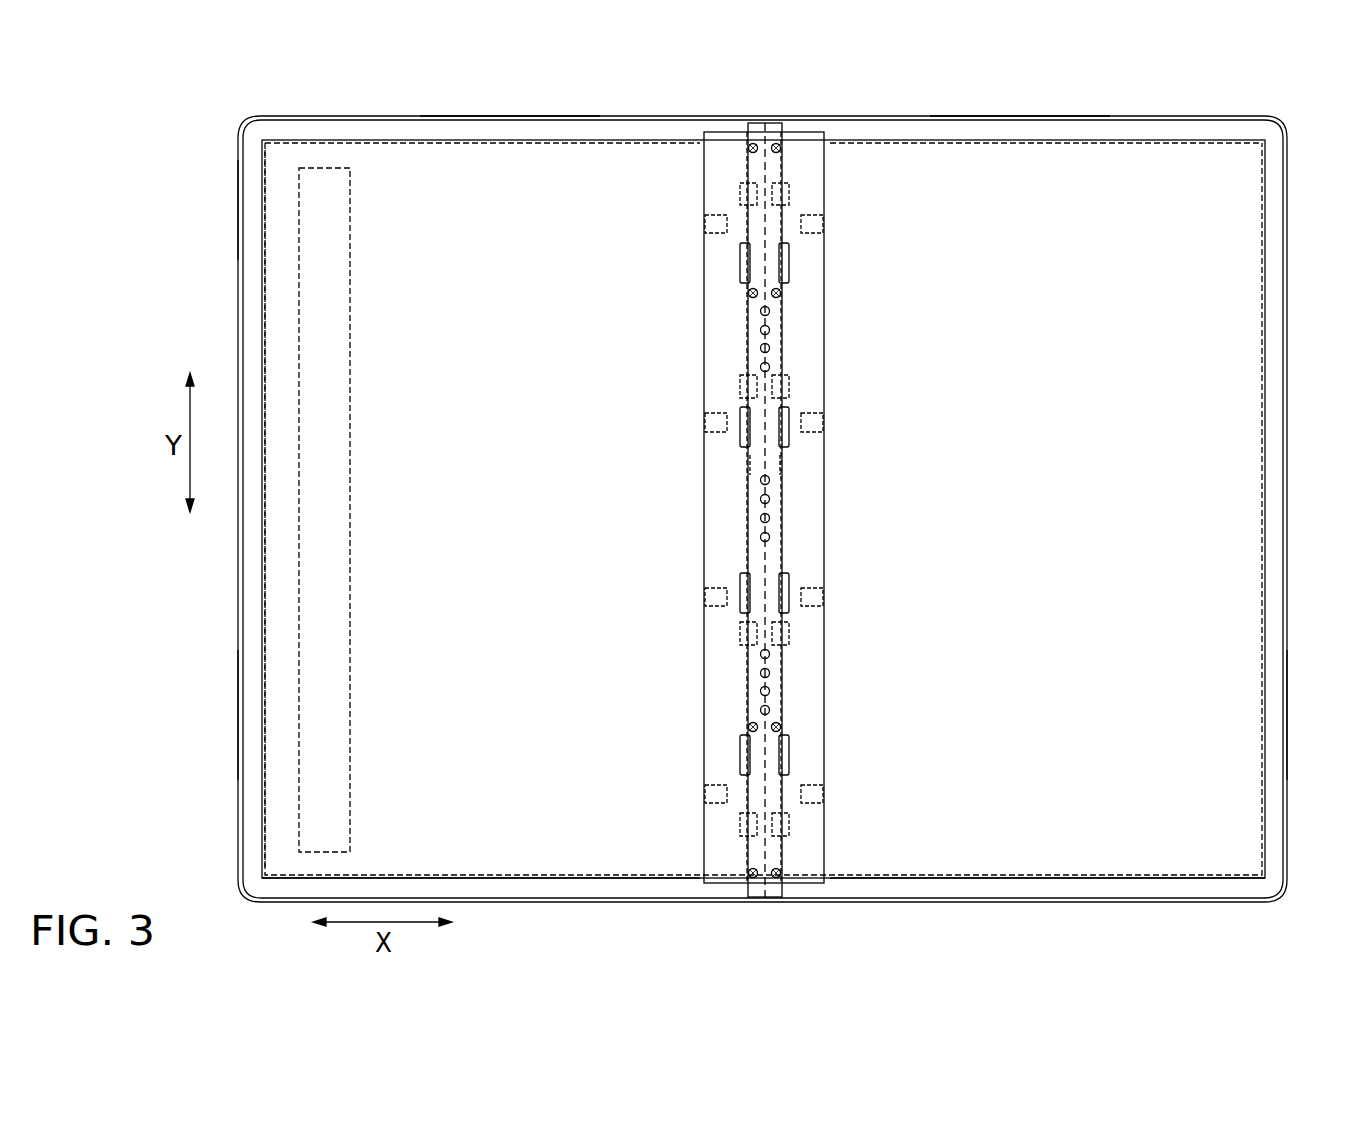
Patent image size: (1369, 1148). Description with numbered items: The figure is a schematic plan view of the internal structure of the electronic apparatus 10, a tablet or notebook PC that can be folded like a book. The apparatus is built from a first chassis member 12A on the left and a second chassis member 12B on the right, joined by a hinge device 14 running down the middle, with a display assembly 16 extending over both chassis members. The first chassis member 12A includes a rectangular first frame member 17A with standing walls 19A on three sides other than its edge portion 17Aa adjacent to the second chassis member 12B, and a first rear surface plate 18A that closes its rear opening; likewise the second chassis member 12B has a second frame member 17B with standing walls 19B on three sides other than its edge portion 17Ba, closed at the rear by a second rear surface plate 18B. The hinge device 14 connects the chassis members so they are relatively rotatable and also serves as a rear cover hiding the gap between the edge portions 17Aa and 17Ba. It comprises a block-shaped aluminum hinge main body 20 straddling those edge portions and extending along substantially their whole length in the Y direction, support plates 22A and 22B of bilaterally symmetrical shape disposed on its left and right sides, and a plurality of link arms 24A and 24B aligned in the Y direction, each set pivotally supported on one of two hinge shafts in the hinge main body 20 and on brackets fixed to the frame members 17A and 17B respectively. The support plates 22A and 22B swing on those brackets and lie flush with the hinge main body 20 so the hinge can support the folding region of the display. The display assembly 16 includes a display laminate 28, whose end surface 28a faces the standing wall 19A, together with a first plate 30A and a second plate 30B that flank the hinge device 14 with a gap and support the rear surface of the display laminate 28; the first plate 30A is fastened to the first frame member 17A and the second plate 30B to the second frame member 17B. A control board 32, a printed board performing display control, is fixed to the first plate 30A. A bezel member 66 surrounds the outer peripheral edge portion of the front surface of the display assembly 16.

The electronic apparatus 10 is at (192, 85).
The first chassis member 12A is at (398, 98).
The second chassis member 12B is at (1105, 98).
The hinge device 14 is at (818, 347).
The display assembly 16 is at (1195, 128).
The first frame member 17A is at (503, 108).
The second frame member 17B is at (1016, 108).
The edge portion 17Aa is at (773, 462).
The edge portion 17Ba is at (757, 462).
The first rear surface plate 18A is at (566, 168).
The second rear surface plate 18B is at (960, 168).
The standing walls 19A is at (240, 715).
The standing walls 19B is at (1290, 715).
The hinge main body 20 is at (755, 334).
The support plate 22A is at (715, 668).
The support plate 22B is at (815, 668).
The link arms 24A is at (742, 247).
The link arms 24B is at (787, 247).
The display laminate 28 is at (763, 509).
The end surface 28a is at (265, 298).
The first plate 30A is at (519, 855).
The second plate 30B is at (1003, 855).
The control board 32 is at (350, 442).
The bezel member 66 is at (252, 211).